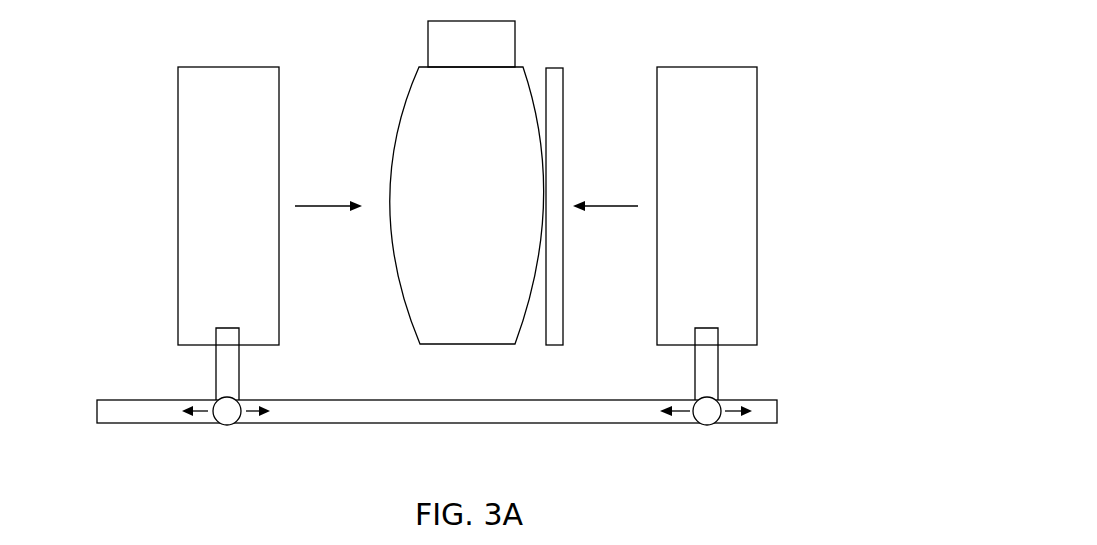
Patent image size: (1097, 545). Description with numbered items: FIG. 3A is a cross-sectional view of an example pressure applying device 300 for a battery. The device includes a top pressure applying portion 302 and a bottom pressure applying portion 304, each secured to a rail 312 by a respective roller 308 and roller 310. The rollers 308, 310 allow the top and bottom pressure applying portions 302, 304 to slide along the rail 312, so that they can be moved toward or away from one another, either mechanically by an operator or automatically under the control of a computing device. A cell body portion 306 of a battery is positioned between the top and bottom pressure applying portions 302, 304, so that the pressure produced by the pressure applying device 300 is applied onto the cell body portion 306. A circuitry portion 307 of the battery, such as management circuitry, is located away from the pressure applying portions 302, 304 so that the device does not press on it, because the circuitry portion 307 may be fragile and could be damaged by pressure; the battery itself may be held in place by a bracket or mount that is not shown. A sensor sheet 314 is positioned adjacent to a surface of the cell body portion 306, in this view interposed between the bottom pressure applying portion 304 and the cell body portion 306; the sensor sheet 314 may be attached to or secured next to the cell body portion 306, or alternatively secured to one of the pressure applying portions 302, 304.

The pressure applying device 300 is at (773, 38).
The top pressure applying portion 302 is at (228, 206).
The bottom pressure applying portion 304 is at (707, 206).
The cell body portion 306 is at (467, 205).
The circuitry portion 307 is at (471, 44).
The roller 308 is at (229, 424).
The roller 310 is at (709, 424).
The rail 312 is at (410, 422).
The sensor sheet 314 is at (563, 68).